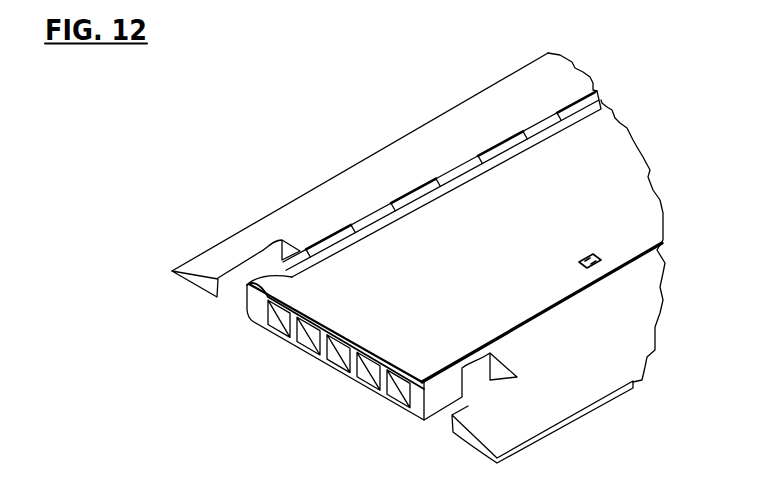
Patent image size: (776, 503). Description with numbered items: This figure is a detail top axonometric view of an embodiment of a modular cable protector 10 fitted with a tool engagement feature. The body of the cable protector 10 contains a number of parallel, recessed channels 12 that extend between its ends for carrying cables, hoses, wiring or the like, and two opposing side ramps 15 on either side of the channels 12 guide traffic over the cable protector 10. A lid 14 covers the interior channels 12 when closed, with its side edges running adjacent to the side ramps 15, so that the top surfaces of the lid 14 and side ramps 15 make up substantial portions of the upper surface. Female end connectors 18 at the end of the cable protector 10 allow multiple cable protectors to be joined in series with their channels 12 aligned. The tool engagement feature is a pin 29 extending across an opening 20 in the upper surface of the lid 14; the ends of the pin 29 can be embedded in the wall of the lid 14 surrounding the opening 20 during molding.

The cable protector 10 is at (178, 209).
The channels 12 is at (337, 367).
The lid 14 is at (582, 183).
The side ramps 15 is at (337, 198).
The female end connectors 18 is at (238, 297).
The opening 20 is at (594, 253).
The pin 29 is at (598, 256).